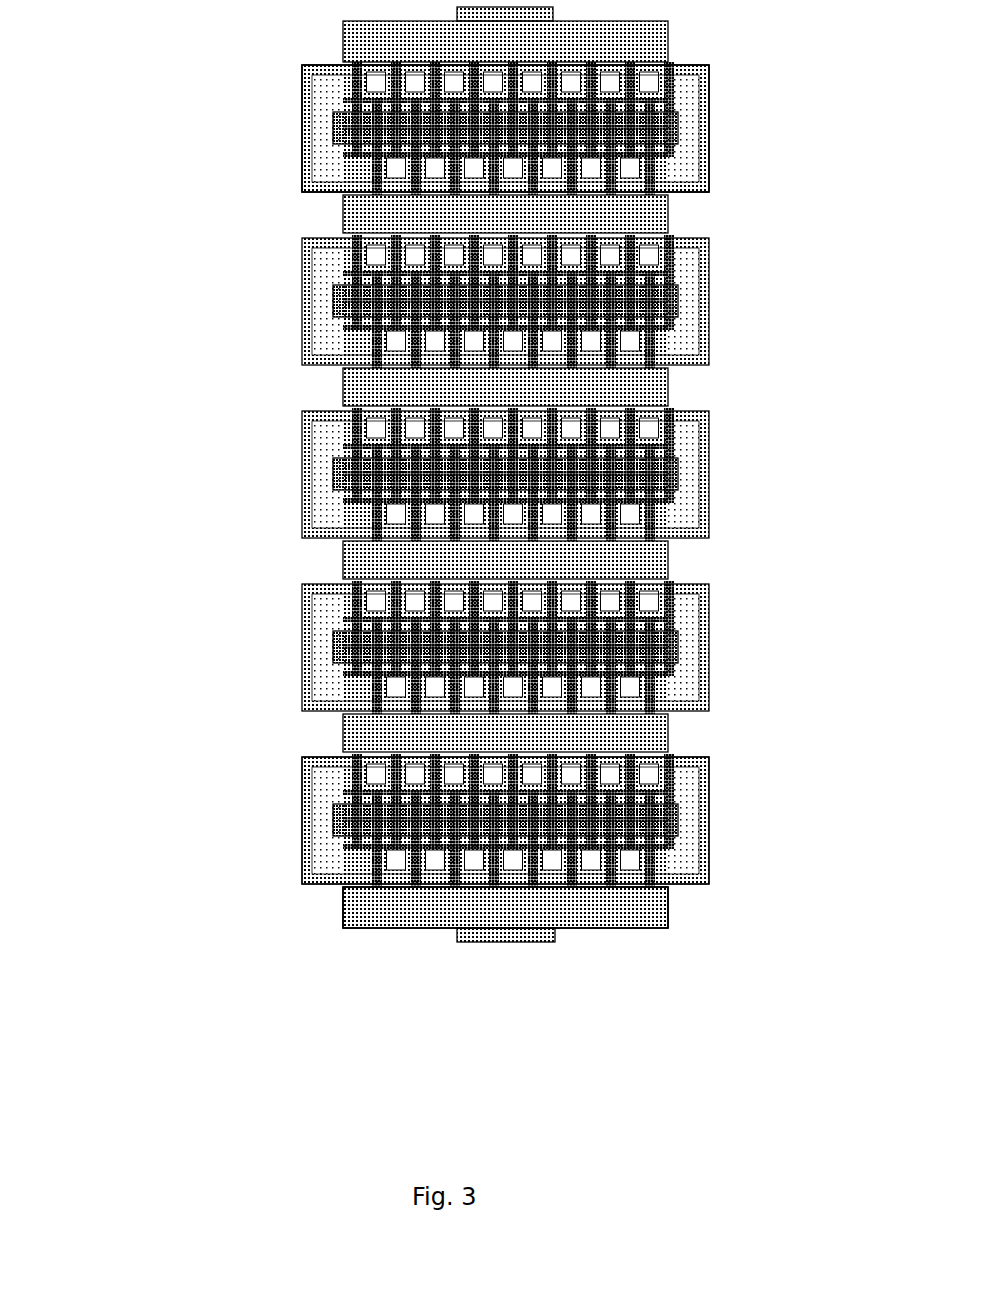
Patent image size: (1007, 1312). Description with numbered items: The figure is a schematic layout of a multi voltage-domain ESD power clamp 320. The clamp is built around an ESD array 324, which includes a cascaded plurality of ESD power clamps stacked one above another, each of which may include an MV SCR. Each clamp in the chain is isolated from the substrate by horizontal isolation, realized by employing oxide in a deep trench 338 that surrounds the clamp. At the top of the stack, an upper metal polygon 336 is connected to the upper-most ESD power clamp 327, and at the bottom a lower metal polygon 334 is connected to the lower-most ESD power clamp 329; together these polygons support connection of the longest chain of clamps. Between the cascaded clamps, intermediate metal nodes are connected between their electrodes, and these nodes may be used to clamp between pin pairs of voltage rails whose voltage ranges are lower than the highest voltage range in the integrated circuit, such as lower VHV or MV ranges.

The multi voltage-domain ESD power clamp 320 is at (99, 1019).
The ESD array 324 is at (742, 930).
The upper-most ESD power clamp 327 is at (697, 122).
The lower-most ESD power clamp 329 is at (697, 823).
The lower metal polygon 334 is at (313, 912).
The upper metal polygon 336 is at (312, 37).
The deep trench 338 is at (713, 67).